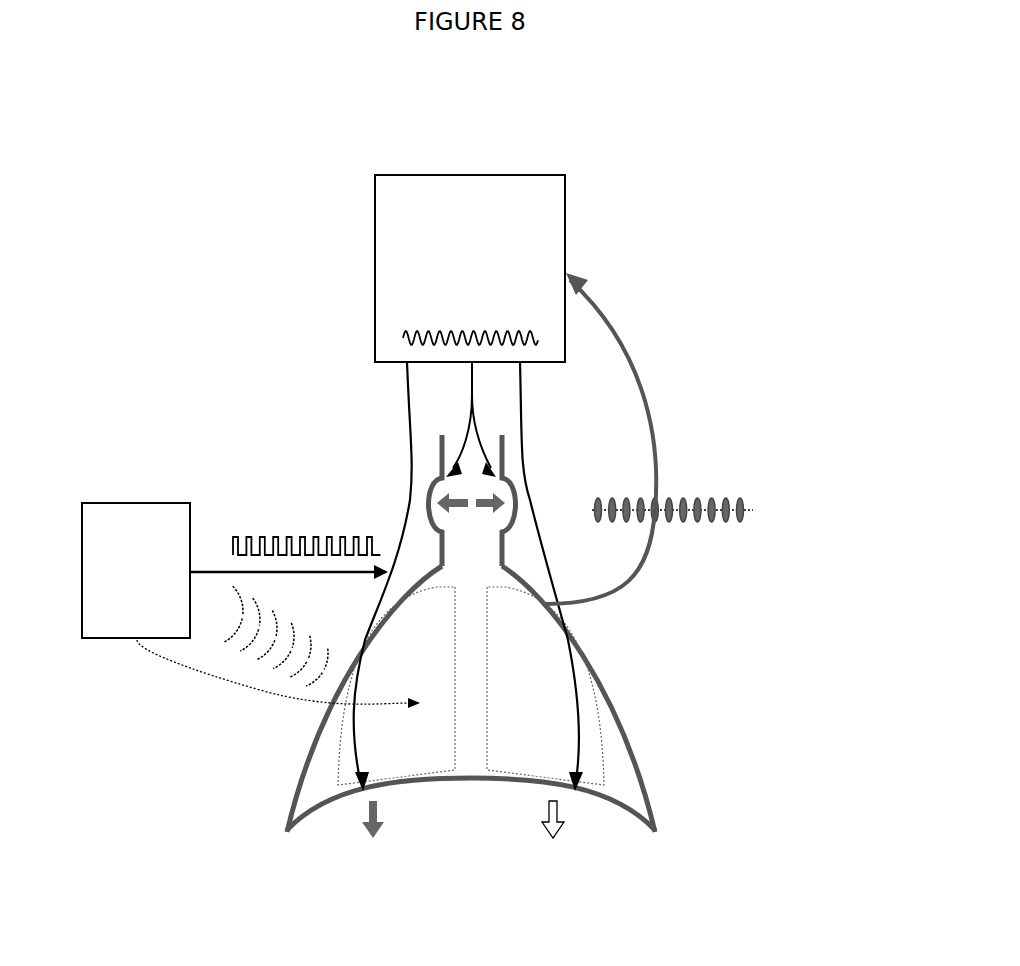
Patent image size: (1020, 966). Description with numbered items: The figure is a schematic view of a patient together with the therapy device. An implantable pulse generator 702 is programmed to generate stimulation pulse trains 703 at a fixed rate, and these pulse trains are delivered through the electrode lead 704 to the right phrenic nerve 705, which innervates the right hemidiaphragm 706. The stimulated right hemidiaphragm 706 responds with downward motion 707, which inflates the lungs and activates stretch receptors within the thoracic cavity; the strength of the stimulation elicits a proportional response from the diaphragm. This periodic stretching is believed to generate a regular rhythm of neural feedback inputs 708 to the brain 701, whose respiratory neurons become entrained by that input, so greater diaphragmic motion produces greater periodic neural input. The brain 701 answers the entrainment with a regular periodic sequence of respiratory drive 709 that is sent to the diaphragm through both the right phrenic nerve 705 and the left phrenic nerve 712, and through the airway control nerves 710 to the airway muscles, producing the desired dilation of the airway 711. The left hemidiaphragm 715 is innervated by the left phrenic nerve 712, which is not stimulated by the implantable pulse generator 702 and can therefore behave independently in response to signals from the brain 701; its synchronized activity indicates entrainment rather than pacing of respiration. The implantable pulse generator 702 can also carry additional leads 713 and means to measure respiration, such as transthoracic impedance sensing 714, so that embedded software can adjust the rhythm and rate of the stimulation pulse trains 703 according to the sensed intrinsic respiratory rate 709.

The brain 701 is at (570, 255).
The implantable pulse generator 702 is at (172, 503).
The stimulation pulse trains 703 is at (297, 540).
The electrode lead 704 is at (300, 575).
The right phrenic nerve 705 is at (408, 478).
The right hemidiaphragm 706 is at (337, 800).
The downward motion 707 is at (368, 840).
The neural feedback inputs 708 is at (680, 493).
The respiratory drive 709 is at (408, 330).
The airway control nerves 710 is at (477, 428).
The airway 711 is at (513, 492).
The left phrenic nerve 712 is at (583, 740).
The additional leads 713 is at (193, 677).
The transthoracic impedance sensing 714 is at (207, 628).
The left hemidiaphragm 715 is at (622, 807).